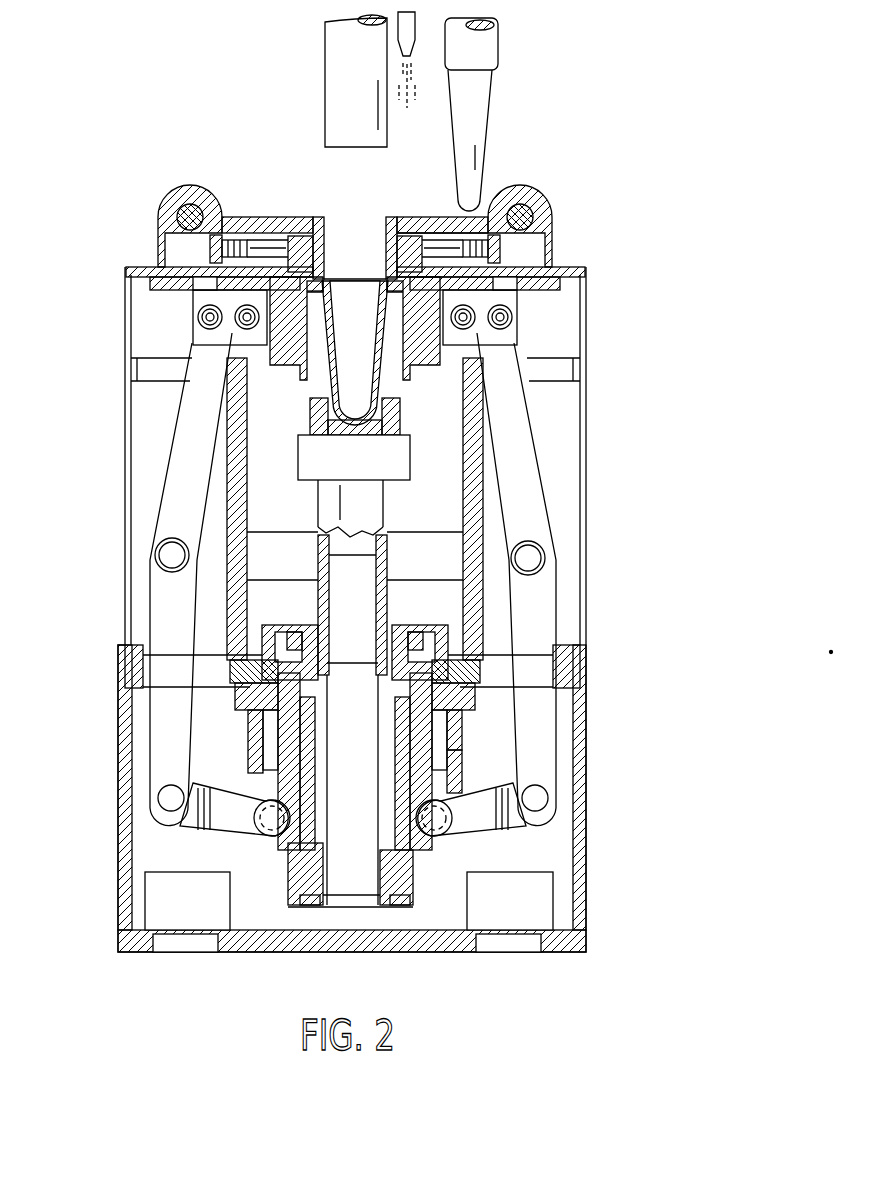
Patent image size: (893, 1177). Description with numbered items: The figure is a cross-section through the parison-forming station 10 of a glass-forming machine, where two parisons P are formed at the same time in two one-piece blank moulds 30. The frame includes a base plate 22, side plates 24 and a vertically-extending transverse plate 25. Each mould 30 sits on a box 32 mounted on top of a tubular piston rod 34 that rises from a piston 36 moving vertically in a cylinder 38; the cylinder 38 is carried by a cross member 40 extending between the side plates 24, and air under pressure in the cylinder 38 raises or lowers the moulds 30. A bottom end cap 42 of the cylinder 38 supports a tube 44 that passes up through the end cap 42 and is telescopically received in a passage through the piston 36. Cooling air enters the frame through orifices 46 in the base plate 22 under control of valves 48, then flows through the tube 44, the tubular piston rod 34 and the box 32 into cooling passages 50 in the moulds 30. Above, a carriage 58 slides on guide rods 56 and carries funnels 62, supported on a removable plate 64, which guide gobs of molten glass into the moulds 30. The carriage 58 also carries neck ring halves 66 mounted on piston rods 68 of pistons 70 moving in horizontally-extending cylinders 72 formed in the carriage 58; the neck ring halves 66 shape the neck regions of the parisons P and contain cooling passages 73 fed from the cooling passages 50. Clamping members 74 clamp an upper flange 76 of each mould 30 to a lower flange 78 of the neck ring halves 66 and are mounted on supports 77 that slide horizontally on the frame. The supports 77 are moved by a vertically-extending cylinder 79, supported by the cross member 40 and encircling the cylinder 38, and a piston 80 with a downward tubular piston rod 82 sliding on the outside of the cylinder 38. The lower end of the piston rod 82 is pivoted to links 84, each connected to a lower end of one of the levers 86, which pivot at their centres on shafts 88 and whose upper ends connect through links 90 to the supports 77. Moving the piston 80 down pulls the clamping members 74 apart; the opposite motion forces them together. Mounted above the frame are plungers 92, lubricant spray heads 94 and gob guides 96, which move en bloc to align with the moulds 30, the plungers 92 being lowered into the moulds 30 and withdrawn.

The parison-forming station 10 is at (300, 40).
The base plate 22 is at (413, 940).
The side plates 24 is at (124, 815).
The vertically-extending transverse plate 25 is at (133, 428).
The one-piece blank mould 30 is at (393, 423).
The box 32 is at (400, 480).
The tubular piston rod 34 is at (318, 507).
The piston 36 is at (380, 685).
The cylinder 38 is at (405, 750).
The cross member 40 is at (457, 673).
The bottom end cap 42 is at (395, 890).
The tube 44 is at (370, 828).
The orifices 46 is at (215, 940).
The valves 48 is at (202, 912).
The cooling passages 50 is at (327, 400).
The guide rods 56 is at (175, 215).
The carriage 58 is at (233, 213).
The funnels 62 is at (392, 235).
The removable transversely-extending plate 64 is at (435, 232).
The neck ring halves 66 is at (300, 250).
The piston rods 68 is at (263, 250).
The pistons 70 is at (158, 262).
The horizontally-extending cylinders 72 is at (170, 242).
The cooling passages 73 is at (320, 245).
The mould and neck ring clamping members 74 is at (287, 350).
The upper flange 76 is at (332, 288).
The supports 77 is at (200, 292).
The lower flange 78 is at (323, 282).
The vertically-extending cylinder 79 is at (258, 740).
The piston 80 is at (425, 707).
The tubular piston rod 82 is at (422, 767).
The links 84 is at (230, 822).
The levers 86 is at (160, 603).
The shafts 88 is at (175, 555).
The links 90 is at (237, 330).
The plungers 92 is at (478, 100).
The lubricant spray heads 94 is at (413, 22).
The gob guides 96 is at (340, 78).
The parisons P is at (377, 375).